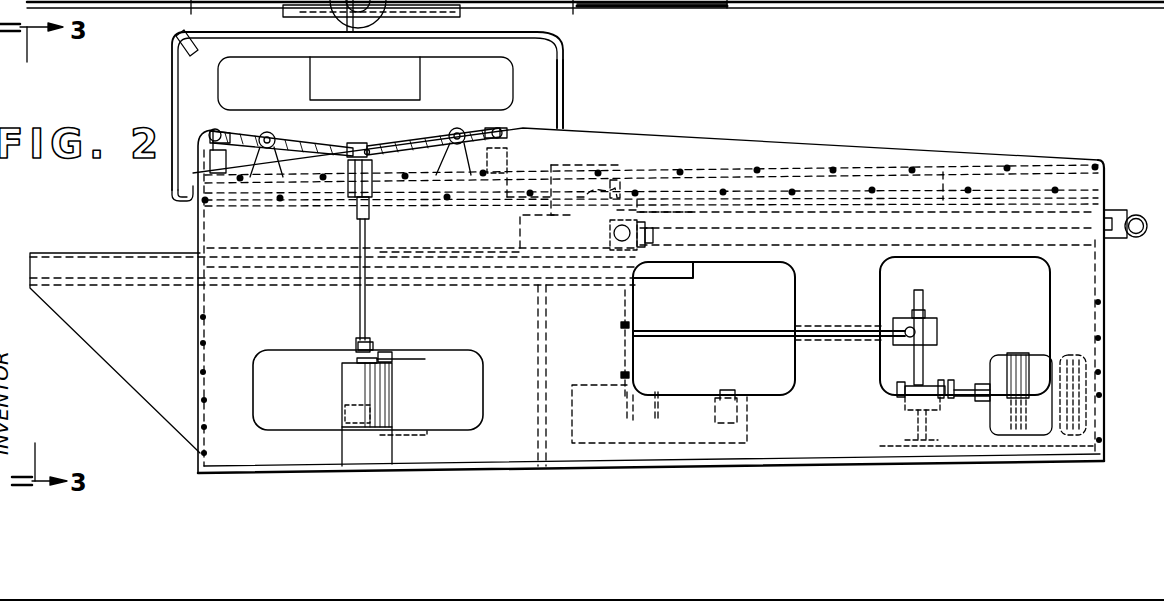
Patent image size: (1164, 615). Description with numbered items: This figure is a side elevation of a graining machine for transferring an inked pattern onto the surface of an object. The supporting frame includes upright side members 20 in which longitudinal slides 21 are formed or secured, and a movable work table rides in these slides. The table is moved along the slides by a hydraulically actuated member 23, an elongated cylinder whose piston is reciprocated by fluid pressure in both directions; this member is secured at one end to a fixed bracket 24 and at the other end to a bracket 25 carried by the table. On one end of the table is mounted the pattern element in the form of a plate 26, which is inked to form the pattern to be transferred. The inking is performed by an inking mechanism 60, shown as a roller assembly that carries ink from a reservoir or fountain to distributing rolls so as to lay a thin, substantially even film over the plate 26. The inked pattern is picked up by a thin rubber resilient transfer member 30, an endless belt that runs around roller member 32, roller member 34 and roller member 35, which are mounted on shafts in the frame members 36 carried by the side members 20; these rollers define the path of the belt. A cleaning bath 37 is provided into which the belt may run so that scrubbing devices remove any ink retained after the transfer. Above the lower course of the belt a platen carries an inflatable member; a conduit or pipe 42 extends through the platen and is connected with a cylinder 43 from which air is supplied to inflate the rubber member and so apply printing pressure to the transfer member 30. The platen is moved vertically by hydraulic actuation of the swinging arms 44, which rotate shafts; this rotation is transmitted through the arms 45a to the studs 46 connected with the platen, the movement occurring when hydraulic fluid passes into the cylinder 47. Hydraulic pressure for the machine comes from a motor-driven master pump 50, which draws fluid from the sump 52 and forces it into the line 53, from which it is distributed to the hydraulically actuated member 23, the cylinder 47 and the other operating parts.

The upright side members 20 is at (1092, 288).
The longitudinal slides 21 is at (998, 362).
The hydraulically actuated member 23 is at (1108, 240).
The fixed bracket 24 is at (1130, 214).
The bracket 25 is at (610, 232).
The plate 26 is at (806, 2).
The resilient transfer member 30 is at (564, 78).
The roller member 32 is at (178, 197).
The roller member 34 is at (562, 44).
The roller member 35 is at (177, 42).
The frame members 36 is at (565, 118).
The cleaning bath 37 is at (428, 82).
The conduit or pipe 42 is at (268, 131).
The cylinder 43 is at (360, 143).
The swinging arms 44 is at (298, 138).
The arms 45a is at (235, 130).
The studs 46 is at (222, 134).
The cylinder 47 is at (346, 405).
The master pump 50 is at (925, 380).
The sump 52 is at (746, 434).
The line 53 is at (926, 314).
The inking mechanism 60 is at (590, 2).